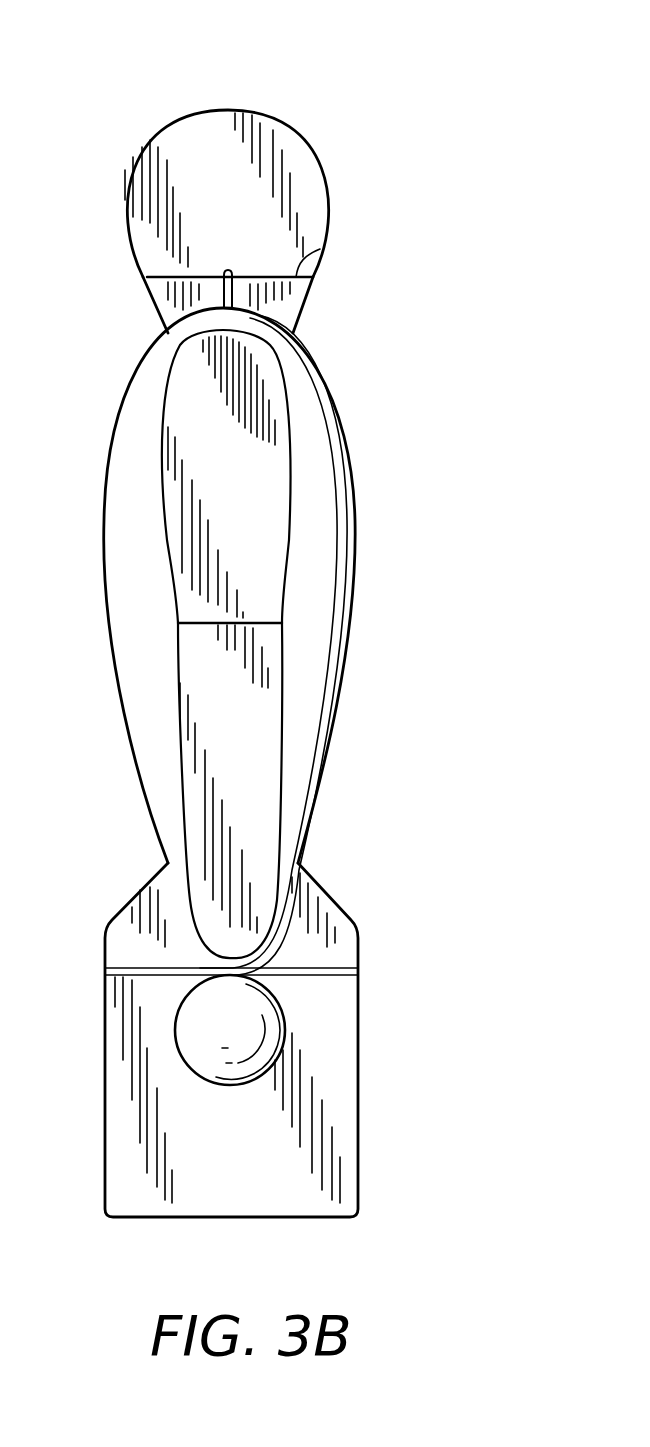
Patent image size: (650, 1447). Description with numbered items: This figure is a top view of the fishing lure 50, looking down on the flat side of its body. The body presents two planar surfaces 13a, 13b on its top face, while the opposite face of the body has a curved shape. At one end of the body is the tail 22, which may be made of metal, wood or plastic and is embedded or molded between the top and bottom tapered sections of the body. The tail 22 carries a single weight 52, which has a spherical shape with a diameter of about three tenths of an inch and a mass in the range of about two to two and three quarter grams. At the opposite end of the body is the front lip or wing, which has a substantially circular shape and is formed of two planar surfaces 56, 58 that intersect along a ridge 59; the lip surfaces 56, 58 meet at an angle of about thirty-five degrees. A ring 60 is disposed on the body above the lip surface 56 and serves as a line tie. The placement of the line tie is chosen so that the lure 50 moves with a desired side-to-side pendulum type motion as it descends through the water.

The lure 50 is at (291, 611).
The planar surface 58 is at (227, 193).
The ridge 59 is at (298, 277).
The planar surface 56 is at (163, 307).
The ring 60 is at (240, 302).
The planar surface 13b is at (258, 490).
The planar surface 13a is at (267, 698).
The weight 52 is at (266, 1030).
The tail 22 is at (358, 1104).